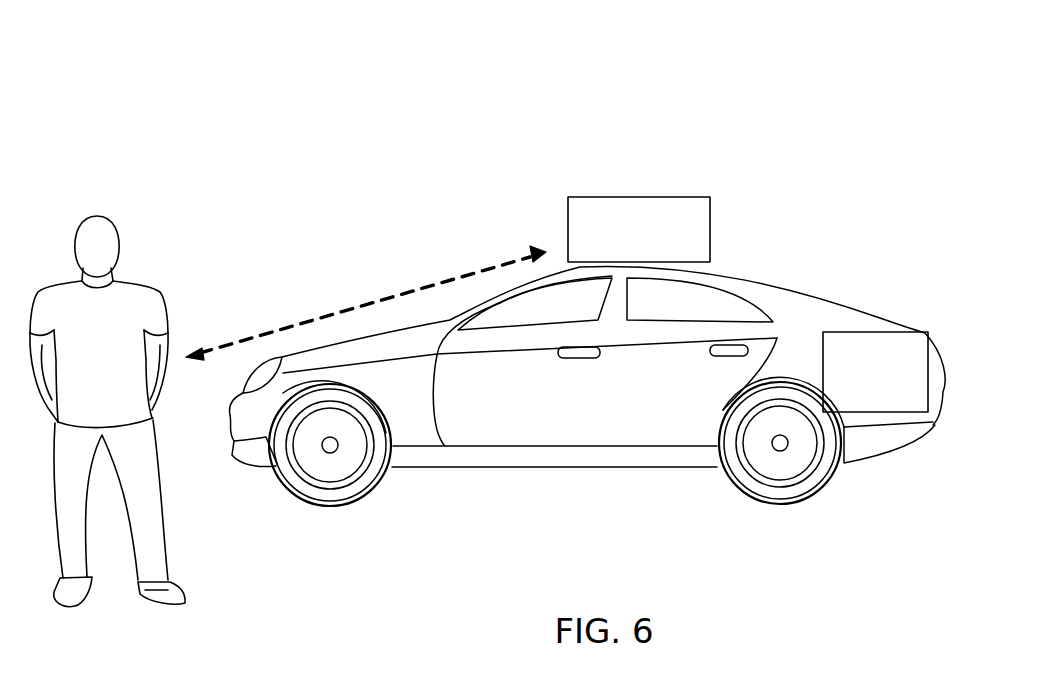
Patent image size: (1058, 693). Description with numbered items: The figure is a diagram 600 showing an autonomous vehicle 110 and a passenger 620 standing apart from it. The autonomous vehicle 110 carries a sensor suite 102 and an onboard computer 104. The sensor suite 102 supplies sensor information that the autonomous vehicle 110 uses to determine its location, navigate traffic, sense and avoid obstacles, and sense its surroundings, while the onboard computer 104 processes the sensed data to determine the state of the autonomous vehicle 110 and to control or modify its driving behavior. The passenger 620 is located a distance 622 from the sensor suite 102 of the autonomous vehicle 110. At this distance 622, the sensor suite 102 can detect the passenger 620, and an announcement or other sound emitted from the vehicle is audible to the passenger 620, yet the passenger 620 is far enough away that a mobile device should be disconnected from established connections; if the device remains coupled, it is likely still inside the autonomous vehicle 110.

The diagram 600 is at (912, 85).
The passenger 620 is at (104, 206).
The distance 622 is at (312, 309).
The autonomous vehicle 110 is at (392, 406).
The sensor suite 102 is at (639, 229).
The onboard computer 104 is at (875, 372).